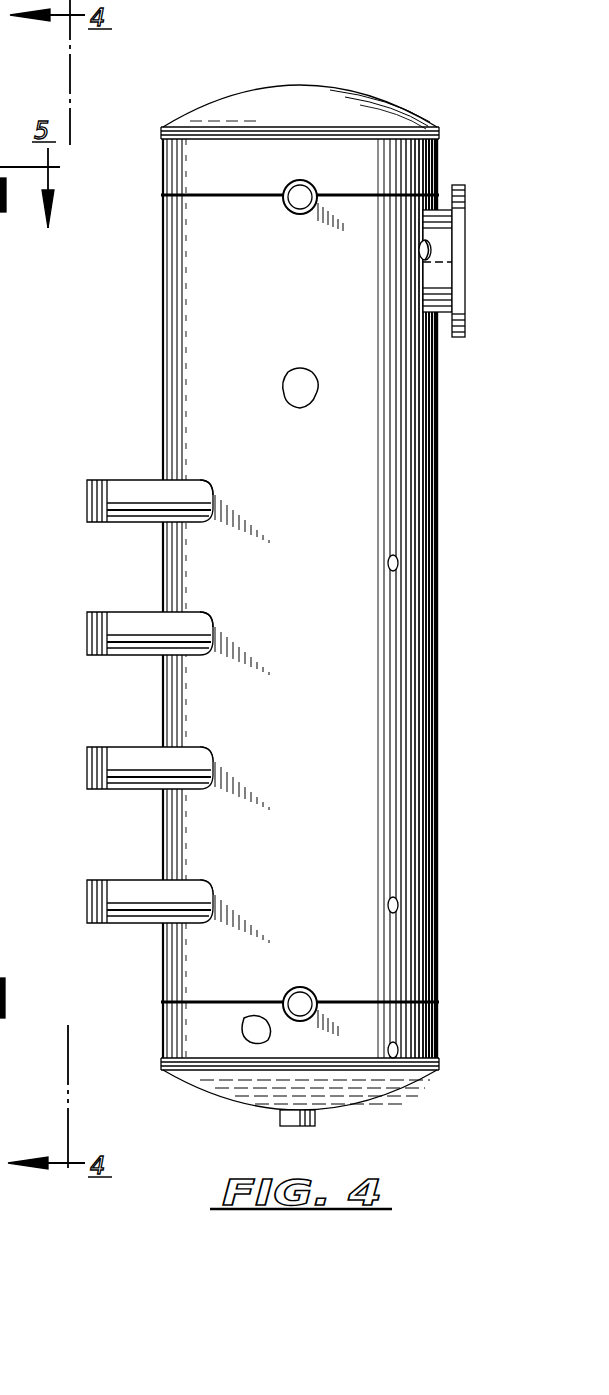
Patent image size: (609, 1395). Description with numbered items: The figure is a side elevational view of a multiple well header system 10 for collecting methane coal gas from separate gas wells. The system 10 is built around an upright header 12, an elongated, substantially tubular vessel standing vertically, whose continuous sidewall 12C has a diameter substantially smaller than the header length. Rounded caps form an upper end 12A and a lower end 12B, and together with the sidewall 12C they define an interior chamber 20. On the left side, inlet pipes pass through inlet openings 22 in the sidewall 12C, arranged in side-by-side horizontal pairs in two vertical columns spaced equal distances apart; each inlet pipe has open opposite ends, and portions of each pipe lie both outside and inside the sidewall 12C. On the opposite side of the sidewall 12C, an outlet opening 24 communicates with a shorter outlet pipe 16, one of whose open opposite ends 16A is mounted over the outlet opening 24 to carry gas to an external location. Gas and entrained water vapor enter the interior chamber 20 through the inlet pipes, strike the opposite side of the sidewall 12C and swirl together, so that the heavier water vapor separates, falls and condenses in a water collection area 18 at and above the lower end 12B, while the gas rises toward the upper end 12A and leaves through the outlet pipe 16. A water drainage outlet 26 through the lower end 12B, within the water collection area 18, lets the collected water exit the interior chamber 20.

The multiple well header system 10 is at (295, 591).
The upright header 12 is at (295, 597).
The upper end 12A is at (292, 84).
The lower end 12B is at (225, 1097).
The continuous sidewall 12C is at (436, 640).
The outlet pipe 16 is at (473, 261).
The open opposite ends 16A is at (463, 262).
The water collection area 18 is at (250, 1030).
The interior chamber 20 is at (300, 386).
The inlet openings 22 is at (205, 497).
The outlet opening 24 is at (420, 262).
The water drainage outlet 26 is at (316, 1120).